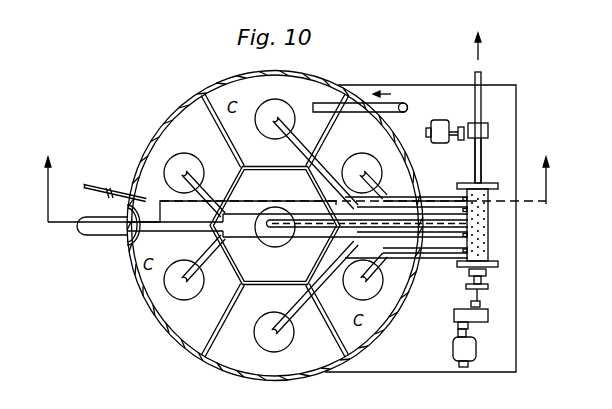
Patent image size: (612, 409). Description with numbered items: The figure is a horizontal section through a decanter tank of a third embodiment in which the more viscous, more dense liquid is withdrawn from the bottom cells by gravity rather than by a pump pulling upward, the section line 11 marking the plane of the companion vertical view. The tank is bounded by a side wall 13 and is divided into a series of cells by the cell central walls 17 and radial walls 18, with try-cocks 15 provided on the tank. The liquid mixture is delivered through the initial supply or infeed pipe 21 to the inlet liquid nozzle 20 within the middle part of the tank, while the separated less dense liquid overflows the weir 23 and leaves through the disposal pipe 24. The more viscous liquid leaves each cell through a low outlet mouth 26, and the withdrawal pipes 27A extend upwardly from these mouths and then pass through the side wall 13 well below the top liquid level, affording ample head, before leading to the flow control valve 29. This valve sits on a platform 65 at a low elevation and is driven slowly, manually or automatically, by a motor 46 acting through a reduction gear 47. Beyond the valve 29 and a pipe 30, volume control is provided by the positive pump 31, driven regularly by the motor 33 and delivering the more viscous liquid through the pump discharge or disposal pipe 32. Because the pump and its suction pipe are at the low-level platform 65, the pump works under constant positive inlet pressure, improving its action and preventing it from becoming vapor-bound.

The section line 11 is at (300, 177).
The side wall 13 is at (163, 327).
The try-cocks 15 is at (92, 186).
The cell central walls 17 is at (270, 167).
The cell radial walls 18 is at (329, 134).
The inlet liquid nozzle 20 is at (334, 103).
The initial supply or infeed pipe 21 is at (396, 112).
The weir 23 is at (141, 236).
The disposal pipe 24 is at (100, 236).
The low outlet mouths 26 is at (363, 154).
The withdrawal pipes 27A is at (212, 194).
The flow control valve 29 is at (488, 248).
The pipe 30 is at (481, 151).
The positive pump 31 is at (488, 132).
The pump discharge or disposal pipe 32 is at (484, 123).
The motor 33 is at (440, 120).
The motor 46 is at (453, 348).
The reduction gear 47 is at (454, 316).
The platform 65 is at (517, 347).